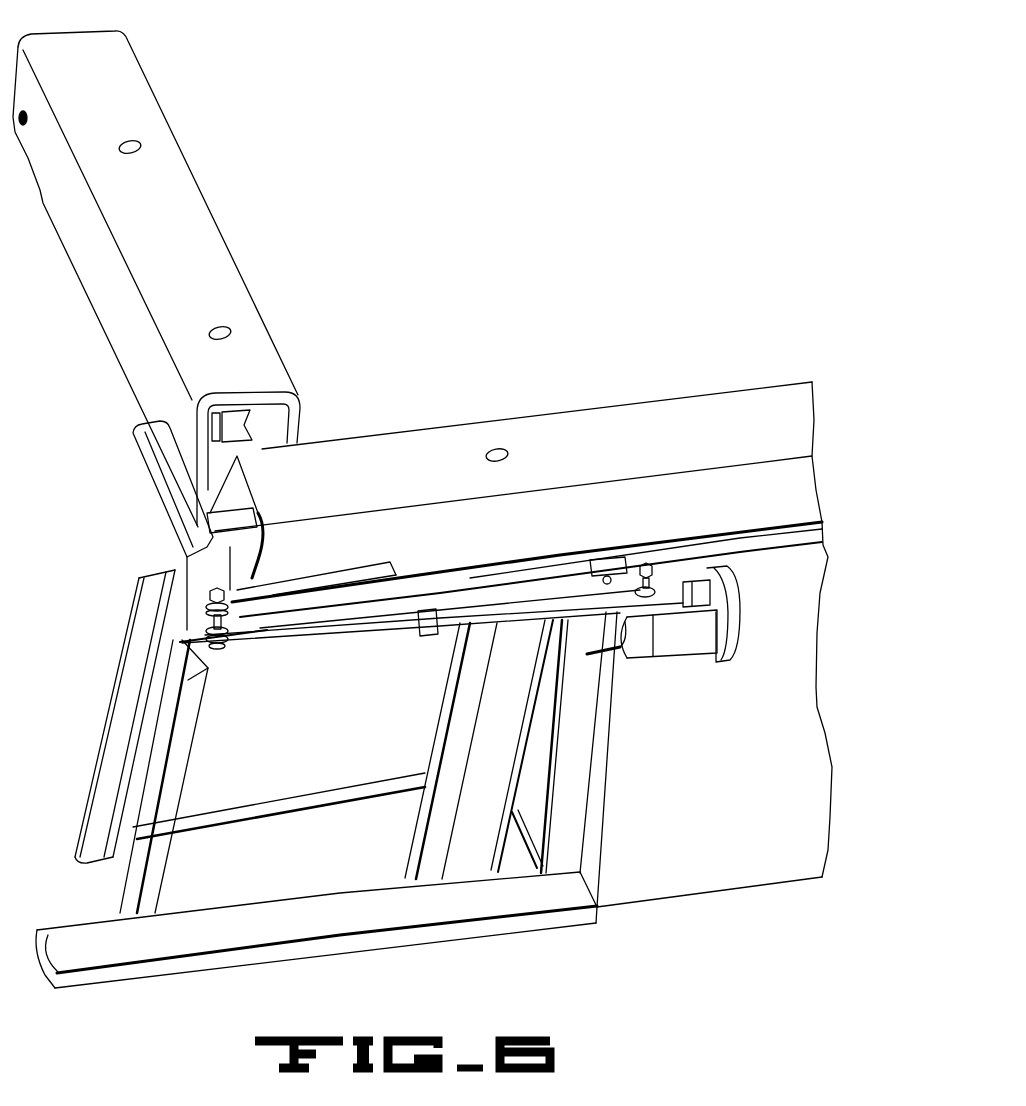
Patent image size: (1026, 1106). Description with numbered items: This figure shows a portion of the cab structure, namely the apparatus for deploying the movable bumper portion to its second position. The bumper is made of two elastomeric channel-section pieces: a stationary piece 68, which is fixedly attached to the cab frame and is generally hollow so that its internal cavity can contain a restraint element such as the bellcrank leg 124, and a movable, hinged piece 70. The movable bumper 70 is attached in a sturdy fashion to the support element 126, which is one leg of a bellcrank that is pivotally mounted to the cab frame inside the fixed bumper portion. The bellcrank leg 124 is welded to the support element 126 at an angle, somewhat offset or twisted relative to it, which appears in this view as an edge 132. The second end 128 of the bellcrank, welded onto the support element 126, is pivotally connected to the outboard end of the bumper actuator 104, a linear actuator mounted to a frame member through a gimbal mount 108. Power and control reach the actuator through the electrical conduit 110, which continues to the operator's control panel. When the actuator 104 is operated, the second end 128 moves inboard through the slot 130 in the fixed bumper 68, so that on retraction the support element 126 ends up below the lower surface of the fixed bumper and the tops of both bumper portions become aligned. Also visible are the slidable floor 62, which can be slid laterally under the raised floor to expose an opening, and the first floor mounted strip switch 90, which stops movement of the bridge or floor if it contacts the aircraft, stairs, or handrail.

The movable bumper portion 70 is at (150, 87).
The stationary bumper piece 68 is at (568, 435).
The bellcrank leg 124 is at (262, 492).
The support element 126 is at (143, 460).
The edge 132 is at (207, 523).
The second end of bellcrank structure 128 is at (207, 570).
The first floor mounted strip switch 90 is at (113, 688).
The slidable floor 62 is at (312, 747).
The slot 130 is at (300, 586).
The bumper actuator 104 is at (447, 622).
The gimbal mount 108 is at (655, 572).
The electrical power supply and control conduit 110 is at (597, 660).